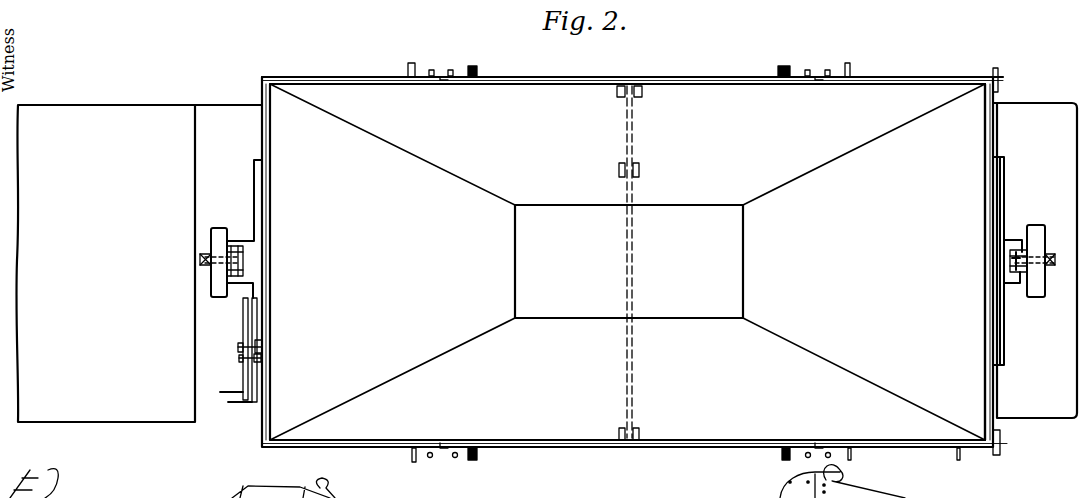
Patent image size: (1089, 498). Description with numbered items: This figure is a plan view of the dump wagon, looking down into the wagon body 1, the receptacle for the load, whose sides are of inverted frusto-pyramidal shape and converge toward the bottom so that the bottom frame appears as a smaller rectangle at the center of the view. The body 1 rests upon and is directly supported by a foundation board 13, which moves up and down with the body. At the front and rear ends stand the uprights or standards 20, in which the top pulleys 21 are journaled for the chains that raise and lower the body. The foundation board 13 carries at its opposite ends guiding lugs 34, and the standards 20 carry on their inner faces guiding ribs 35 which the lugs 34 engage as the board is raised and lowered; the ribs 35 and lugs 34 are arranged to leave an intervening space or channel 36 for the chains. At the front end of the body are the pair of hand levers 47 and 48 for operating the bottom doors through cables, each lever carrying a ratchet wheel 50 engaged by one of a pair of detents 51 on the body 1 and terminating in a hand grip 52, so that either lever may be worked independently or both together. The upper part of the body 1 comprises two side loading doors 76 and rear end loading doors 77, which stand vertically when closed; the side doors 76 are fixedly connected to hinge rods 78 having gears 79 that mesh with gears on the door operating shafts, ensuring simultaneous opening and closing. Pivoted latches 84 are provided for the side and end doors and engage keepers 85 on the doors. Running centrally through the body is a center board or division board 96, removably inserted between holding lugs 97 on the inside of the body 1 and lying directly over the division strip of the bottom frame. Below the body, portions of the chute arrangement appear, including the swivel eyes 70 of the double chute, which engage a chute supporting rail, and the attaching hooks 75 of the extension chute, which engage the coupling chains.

The wagon body 1 is at (357, 113).
The foundation board 13 is at (1006, 168).
The standards 20 is at (219, 228).
The top pulleys 21 is at (211, 260).
The guiding lugs 34 is at (236, 240).
The guiding ribs 35 is at (243, 252).
The channel 36 is at (1012, 258).
The hand lever 47 is at (243, 385).
The hand lever 48 is at (257, 387).
The ratchet wheel 50 is at (243, 358).
The detent 51 is at (243, 347).
The hand grip 52 is at (237, 403).
The swivel eyes 70 is at (323, 486).
The attaching hooks 75 is at (842, 474).
The side loading doors 76 is at (693, 86).
The rear end loading doors 77 is at (990, 149).
The hinge rods 78 is at (678, 77).
The gears 79 is at (472, 66).
The pivoted latches 84 is at (997, 70).
The keepers 85 is at (450, 70).
The center board 96 is at (629, 288).
The holding lugs 97 is at (618, 168).